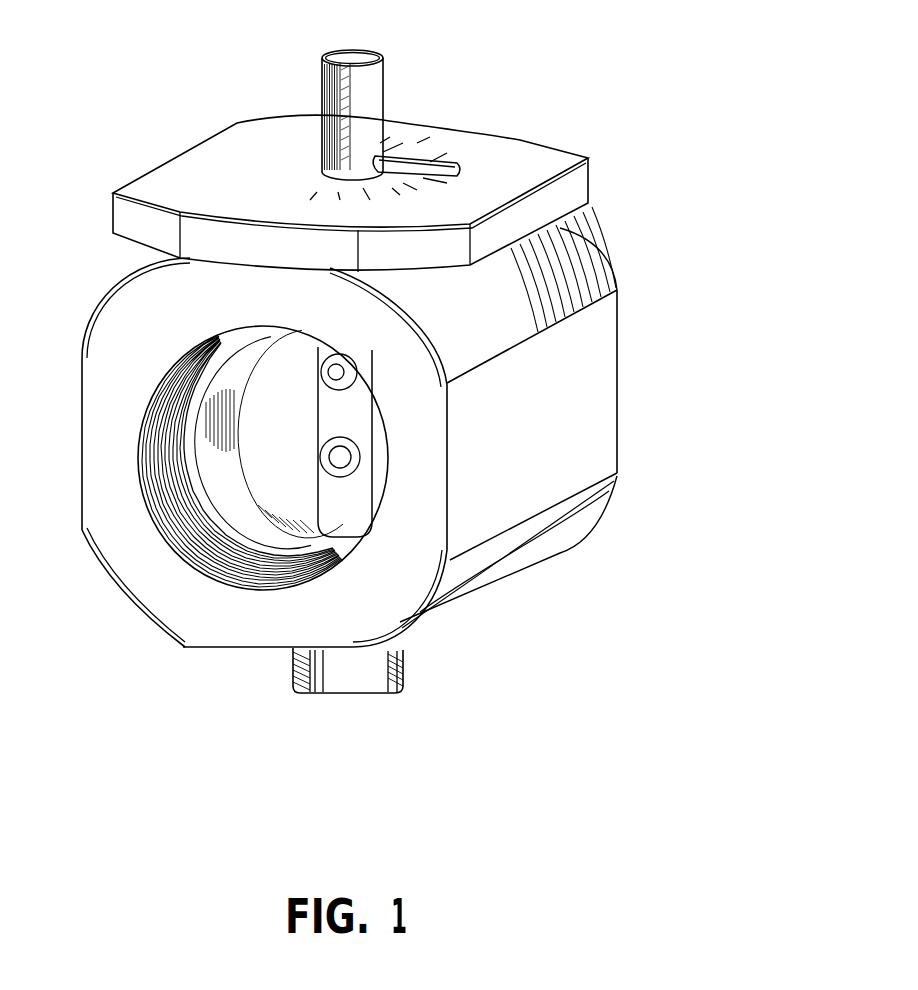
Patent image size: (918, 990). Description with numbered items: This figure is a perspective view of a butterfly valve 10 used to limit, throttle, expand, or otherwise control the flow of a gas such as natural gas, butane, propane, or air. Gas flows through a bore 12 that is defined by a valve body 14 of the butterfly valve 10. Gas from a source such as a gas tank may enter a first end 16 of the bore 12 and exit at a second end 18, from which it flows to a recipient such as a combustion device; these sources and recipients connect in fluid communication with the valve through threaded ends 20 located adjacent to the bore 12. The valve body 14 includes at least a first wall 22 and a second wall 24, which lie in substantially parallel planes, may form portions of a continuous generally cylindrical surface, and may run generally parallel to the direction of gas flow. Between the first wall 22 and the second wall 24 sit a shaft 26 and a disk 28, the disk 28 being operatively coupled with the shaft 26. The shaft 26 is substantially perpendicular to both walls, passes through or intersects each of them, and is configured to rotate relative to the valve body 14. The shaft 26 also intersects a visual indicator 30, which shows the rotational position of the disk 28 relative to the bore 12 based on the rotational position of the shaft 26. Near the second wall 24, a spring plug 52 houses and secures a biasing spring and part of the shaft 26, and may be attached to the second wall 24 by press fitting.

The butterfly valve 10 is at (485, 74).
The bore 12 is at (270, 529).
The valve body 14 is at (537, 297).
The first end 16 is at (215, 491).
The second end 18 is at (620, 432).
The threaded ends 20 is at (257, 588).
The first wall 22 is at (190, 307).
The second wall 24 is at (288, 613).
The shaft 26 is at (350, 527).
The disk 28 is at (263, 418).
The visual indicator 30 is at (250, 158).
The spring plug 52 is at (377, 673).